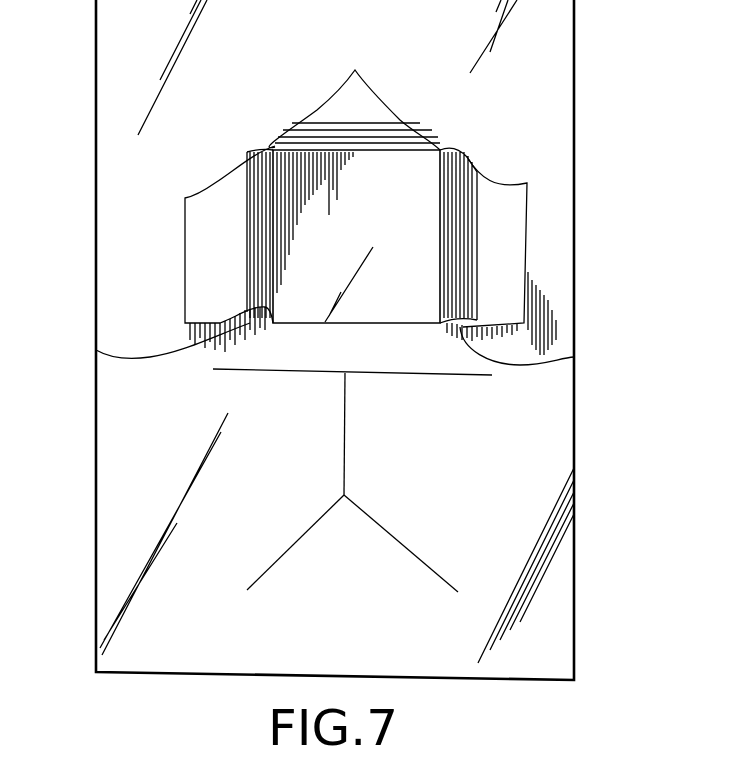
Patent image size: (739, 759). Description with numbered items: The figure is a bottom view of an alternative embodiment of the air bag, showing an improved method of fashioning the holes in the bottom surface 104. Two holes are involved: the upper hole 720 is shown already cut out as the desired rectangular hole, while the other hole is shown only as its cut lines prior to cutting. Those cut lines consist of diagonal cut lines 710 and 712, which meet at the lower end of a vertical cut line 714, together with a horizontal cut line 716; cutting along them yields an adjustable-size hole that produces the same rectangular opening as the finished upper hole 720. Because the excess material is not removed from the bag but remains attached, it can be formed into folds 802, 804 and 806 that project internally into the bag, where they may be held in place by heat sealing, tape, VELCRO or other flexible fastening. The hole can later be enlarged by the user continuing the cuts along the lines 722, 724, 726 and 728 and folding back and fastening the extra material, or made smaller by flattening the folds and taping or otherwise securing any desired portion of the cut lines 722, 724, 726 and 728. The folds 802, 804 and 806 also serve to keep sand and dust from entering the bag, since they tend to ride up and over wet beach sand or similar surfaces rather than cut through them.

The bottom surface 104 is at (540, 125).
The diagonal cut line 710 is at (412, 550).
The diagonal cut line 712 is at (292, 545).
The vertical cut line 714 is at (345, 458).
The horizontal cut line 716 is at (470, 377).
The upper hole 720 is at (400, 240).
The cut line 722 is at (273, 147).
The cut line 724 is at (443, 150).
The cut line 726 is at (567, 360).
The cut line 728 is at (96, 350).
The fold 802 is at (195, 210).
The fold 804 is at (342, 105).
The fold 806 is at (515, 235).